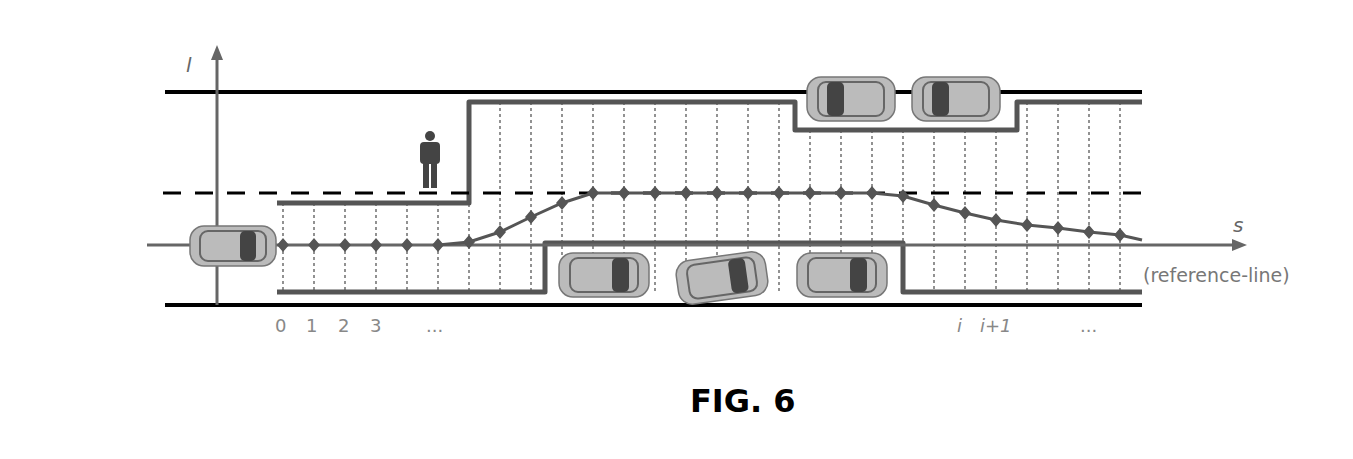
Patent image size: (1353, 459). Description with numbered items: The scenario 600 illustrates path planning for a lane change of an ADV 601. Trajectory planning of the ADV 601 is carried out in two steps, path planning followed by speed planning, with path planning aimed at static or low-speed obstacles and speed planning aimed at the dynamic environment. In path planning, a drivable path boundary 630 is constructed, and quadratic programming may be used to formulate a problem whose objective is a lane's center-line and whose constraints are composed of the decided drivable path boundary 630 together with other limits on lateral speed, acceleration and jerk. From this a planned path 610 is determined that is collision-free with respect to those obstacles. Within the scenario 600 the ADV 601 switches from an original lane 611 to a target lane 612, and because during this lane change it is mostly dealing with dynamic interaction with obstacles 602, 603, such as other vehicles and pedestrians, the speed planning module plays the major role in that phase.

The path planning scenario in station-lateral coordinate system 600 is at (1297, 62).
The ADV 601 is at (227, 245).
The obstacle 602 is at (608, 282).
The obstacle 603 is at (417, 156).
The planned path 610 is at (580, 187).
The original lane 611 is at (178, 246).
The target lane 612 is at (162, 188).
The drivable path boundary 630 is at (504, 294).